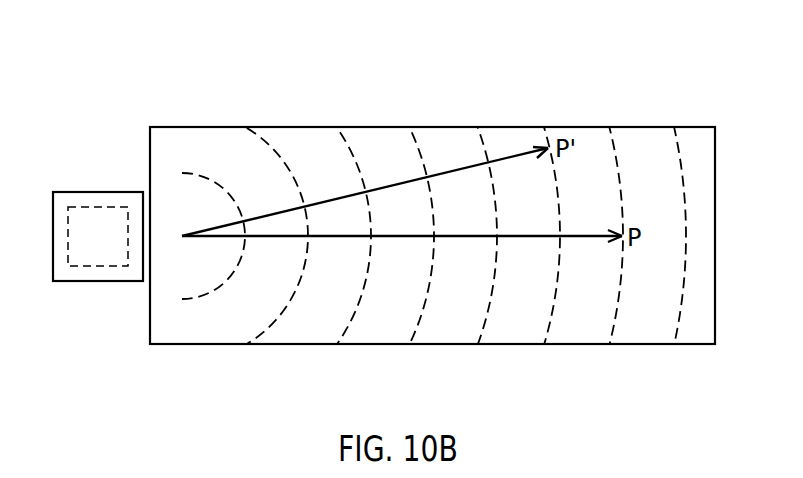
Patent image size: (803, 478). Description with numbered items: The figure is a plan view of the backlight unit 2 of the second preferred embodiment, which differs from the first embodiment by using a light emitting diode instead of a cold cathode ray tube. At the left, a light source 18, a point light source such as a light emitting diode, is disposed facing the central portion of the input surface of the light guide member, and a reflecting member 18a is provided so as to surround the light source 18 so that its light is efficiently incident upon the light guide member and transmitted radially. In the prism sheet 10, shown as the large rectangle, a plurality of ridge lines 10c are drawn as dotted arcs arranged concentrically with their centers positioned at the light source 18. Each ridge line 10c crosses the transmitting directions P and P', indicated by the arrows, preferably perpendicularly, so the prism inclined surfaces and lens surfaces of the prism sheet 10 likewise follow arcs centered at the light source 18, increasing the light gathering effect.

The backlight unit 2 is at (594, 107).
The prism sheet 10 is at (434, 239).
The ridge lines 10c is at (305, 272).
The light source 18 is at (68, 233).
The reflecting member 18a is at (97, 282).